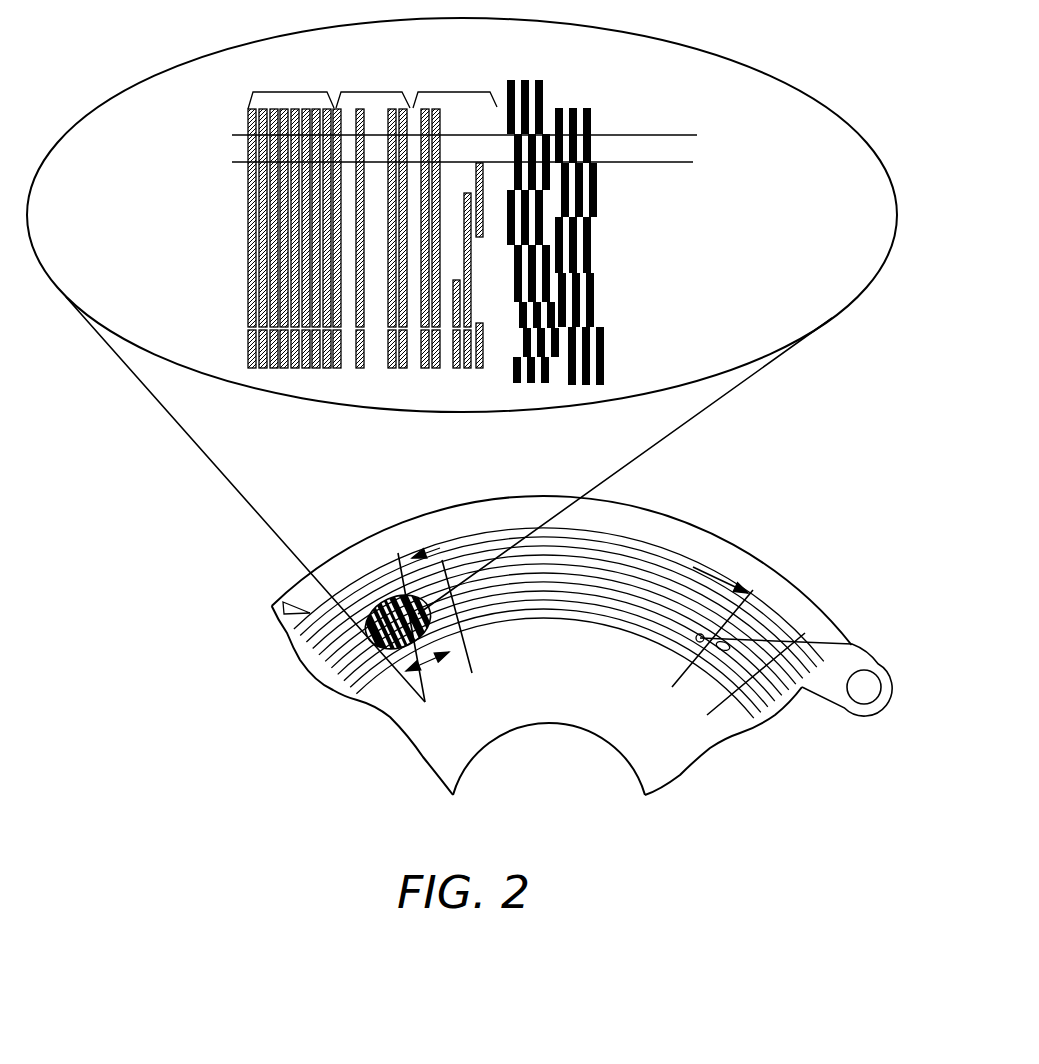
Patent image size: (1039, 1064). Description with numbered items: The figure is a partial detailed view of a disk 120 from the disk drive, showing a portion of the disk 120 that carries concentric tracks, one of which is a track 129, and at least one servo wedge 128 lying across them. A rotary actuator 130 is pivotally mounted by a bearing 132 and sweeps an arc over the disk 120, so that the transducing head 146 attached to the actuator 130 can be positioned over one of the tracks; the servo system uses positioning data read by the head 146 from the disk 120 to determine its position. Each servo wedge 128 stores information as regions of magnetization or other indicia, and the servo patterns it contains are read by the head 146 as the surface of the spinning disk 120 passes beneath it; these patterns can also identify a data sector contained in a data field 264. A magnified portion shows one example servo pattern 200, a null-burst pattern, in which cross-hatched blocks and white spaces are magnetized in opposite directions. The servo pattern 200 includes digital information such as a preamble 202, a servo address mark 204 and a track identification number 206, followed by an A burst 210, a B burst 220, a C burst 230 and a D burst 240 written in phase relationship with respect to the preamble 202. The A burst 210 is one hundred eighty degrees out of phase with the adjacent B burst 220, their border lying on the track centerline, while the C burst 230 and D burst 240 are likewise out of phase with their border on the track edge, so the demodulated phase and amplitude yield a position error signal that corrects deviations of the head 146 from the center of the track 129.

The disk 120 is at (273, 606).
The servo wedge 128 is at (447, 660).
The track 129 is at (634, 560).
The rotary actuator 130 is at (806, 690).
The bearing 132 is at (872, 671).
The transducing head 146 is at (700, 633).
The data field 264 is at (480, 535).
The servo pattern 200 is at (716, 55).
The preamble 202 is at (248, 101).
The servo address mark 204 is at (390, 90).
The track identification number 206 is at (478, 90).
The A burst 210 is at (545, 92).
The B burst 220 is at (538, 147).
The C burst 230 is at (590, 117).
The D burst 240 is at (594, 205).